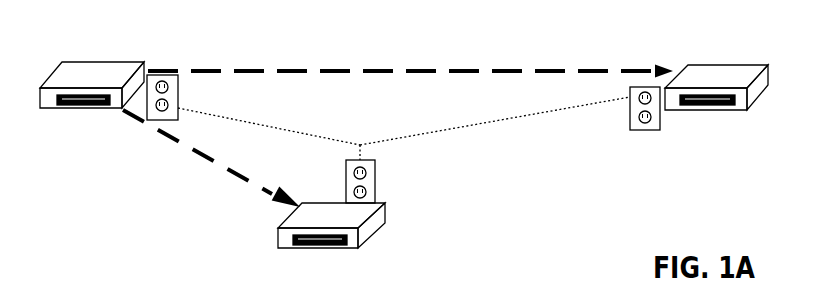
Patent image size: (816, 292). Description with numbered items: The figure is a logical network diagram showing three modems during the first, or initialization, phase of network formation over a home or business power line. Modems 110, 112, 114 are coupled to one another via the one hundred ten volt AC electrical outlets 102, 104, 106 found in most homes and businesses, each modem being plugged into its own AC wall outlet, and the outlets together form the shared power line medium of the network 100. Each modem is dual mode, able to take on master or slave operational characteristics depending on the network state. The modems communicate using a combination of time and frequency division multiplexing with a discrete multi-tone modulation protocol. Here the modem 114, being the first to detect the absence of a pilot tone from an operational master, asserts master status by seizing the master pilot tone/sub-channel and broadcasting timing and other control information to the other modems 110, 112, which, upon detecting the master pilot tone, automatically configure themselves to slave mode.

The power line communication network 100 is at (360, 147).
The AC electrical outlet 102 is at (630, 91).
The AC electrical outlet 104 is at (376, 178).
The AC electrical outlet 106 is at (178, 91).
The modem 110 is at (695, 65).
The modem 112 is at (360, 250).
The modem 114 is at (97, 62).